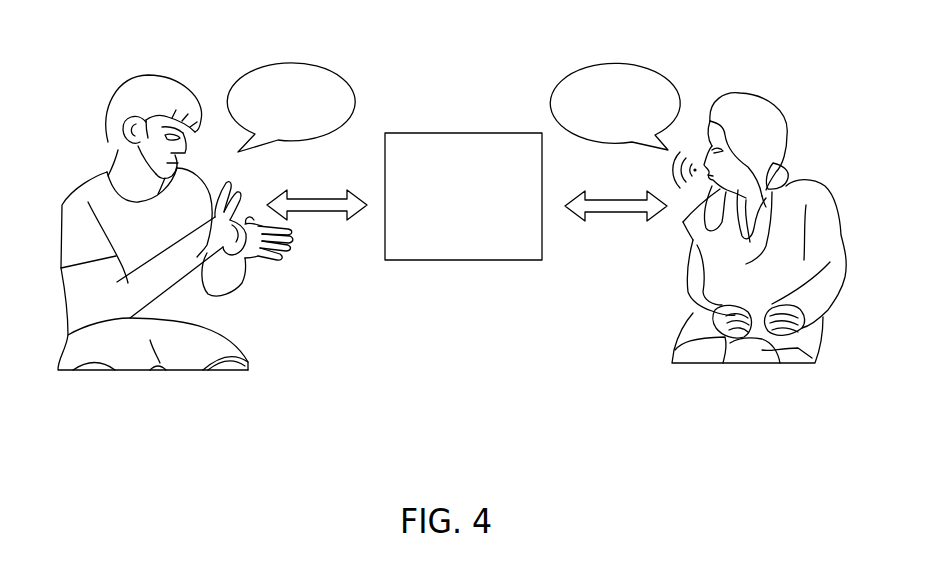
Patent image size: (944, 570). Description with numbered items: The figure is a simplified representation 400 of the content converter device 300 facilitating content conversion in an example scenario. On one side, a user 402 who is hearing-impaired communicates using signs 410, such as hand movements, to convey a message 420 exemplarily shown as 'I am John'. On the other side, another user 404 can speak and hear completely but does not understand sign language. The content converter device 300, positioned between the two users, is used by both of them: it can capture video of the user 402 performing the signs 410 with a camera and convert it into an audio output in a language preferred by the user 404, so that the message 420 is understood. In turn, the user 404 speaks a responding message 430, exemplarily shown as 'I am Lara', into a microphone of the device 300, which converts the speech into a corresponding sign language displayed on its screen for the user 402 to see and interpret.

The content converter device 300 is at (517, 232).
The simplified representation 400 is at (800, 422).
The user 402 is at (62, 192).
The user 404 is at (808, 180).
The signs 410 is at (265, 265).
The message 420 is at (322, 67).
The responding message 430 is at (649, 64).